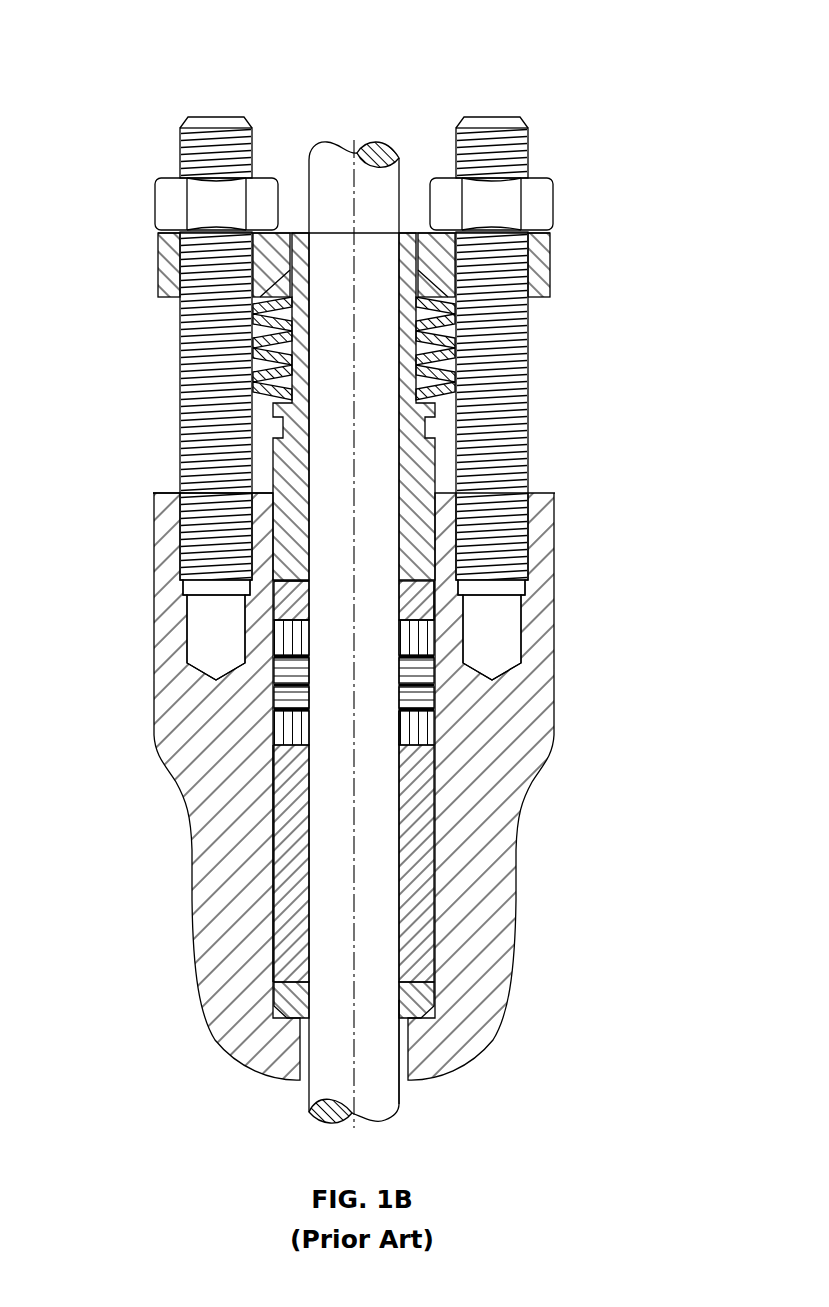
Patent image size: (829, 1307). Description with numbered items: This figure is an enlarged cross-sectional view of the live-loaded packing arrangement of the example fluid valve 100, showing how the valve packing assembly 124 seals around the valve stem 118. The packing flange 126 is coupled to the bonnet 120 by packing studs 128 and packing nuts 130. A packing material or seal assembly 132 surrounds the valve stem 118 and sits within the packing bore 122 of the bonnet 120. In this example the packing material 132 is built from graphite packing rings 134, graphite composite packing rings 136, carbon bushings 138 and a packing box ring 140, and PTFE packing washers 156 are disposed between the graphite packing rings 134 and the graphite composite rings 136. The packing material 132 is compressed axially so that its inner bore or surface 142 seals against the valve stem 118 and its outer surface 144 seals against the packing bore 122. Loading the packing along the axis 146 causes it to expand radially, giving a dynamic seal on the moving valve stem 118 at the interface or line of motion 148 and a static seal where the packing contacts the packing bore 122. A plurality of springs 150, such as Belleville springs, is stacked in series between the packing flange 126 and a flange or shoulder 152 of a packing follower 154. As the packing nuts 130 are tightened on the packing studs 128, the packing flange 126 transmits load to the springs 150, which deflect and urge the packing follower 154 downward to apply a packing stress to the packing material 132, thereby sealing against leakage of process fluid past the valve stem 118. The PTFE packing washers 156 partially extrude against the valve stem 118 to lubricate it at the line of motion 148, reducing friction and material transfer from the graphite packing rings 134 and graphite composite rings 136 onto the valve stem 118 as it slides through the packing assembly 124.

The valve assembly 100 is at (122, 32).
The valve stem 118 is at (400, 1102).
The bonnet 120 is at (195, 948).
The packing bore 122 is at (270, 836).
The valve packing assembly 124 is at (590, 85).
The packing flange 126 is at (550, 252).
The packing studs 128 is at (178, 442).
The packing nuts 130 is at (155, 200).
The packing material or seal assembly 132 is at (445, 587).
The graphite packing rings 134 is at (425, 672).
The graphite composite packing rings 136 is at (425, 637).
The carbon bushings 138 is at (282, 588).
The packing box ring 140 is at (420, 993).
The inner bore or surface 142 is at (398, 602).
The outer surface 144 is at (273, 621).
The axis 146 is at (353, 188).
The interface or line of motion 148 is at (416, 744).
The springs 150 is at (458, 365).
The flange or shoulder 152 is at (433, 434).
The packing follower 154 is at (290, 523).
The PTFE packing washers 156 is at (288, 657).